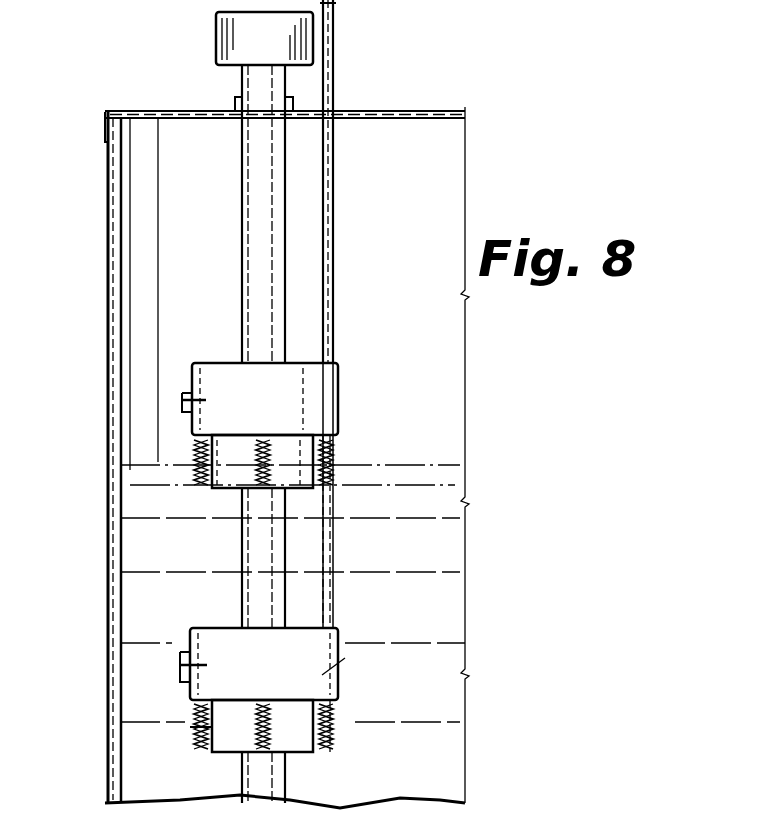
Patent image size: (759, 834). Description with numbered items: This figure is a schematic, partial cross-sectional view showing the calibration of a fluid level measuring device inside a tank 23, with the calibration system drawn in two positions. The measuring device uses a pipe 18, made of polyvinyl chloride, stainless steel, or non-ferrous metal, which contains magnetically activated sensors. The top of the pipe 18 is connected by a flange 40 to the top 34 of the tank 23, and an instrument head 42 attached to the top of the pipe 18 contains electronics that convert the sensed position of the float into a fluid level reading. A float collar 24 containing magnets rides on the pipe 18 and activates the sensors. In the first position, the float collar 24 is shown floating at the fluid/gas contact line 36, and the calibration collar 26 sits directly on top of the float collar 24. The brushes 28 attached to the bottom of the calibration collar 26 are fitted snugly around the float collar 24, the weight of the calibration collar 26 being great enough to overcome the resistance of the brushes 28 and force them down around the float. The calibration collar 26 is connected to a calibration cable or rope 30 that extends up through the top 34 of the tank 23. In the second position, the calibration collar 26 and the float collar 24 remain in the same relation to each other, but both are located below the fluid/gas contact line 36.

The pipe 18 is at (240, 228).
The tank 23 is at (110, 292).
The float collar 24 is at (220, 492).
The calibration collar 26 is at (338, 400).
The brushes 28 is at (185, 727).
The calibration cable or rope 30 is at (332, 298).
The top of the tank 34 is at (406, 110).
The fluid/gas contact line 36 is at (437, 465).
The flange 40 is at (238, 118).
The instrument head 42 is at (227, 35).